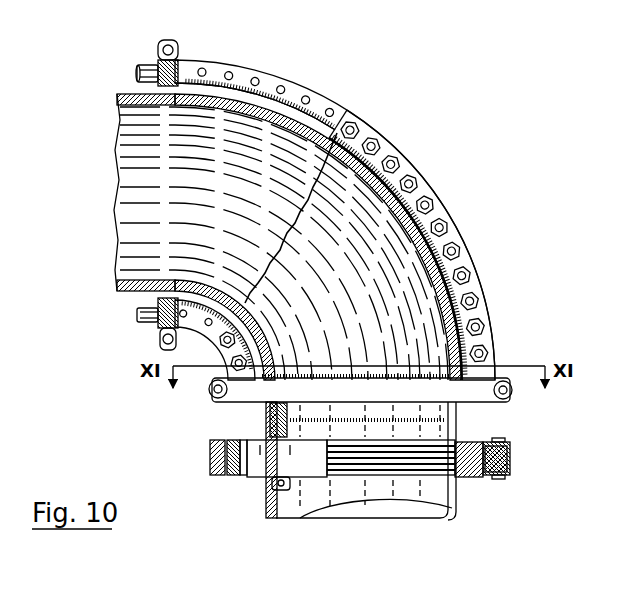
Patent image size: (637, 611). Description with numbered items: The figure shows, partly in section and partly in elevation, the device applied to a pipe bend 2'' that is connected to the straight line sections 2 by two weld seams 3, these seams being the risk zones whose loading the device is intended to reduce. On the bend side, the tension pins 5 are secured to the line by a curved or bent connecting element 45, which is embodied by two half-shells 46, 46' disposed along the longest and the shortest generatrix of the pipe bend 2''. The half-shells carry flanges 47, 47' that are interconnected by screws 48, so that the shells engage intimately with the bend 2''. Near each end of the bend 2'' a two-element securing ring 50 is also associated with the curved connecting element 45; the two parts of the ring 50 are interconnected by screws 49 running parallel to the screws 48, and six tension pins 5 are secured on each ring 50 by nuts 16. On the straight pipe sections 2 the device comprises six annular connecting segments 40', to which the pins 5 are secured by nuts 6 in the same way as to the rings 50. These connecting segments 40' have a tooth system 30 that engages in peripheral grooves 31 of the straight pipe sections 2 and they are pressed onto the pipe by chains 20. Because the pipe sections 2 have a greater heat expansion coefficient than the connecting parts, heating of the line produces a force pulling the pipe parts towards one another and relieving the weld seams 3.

The pipe section 2 is at (287, 325).
The pipe bend 2'' is at (264, 210).
The weld seam 3 is at (133, 91).
The tension pin 5 is at (137, 316).
The nut 6 is at (273, 487).
The nut 16 is at (302, 380).
The chain 20 is at (518, 466).
The tooth system 30 is at (460, 478).
The peripheral groove 31 is at (345, 472).
The annular connecting segment 40' is at (509, 486).
The curved connecting element 45 is at (412, 156).
The half-shell 46 is at (326, 218).
The half-shell 46' is at (411, 259).
The flange 47 is at (343, 157).
The flange 47' is at (179, 339).
The screw 48 is at (478, 292).
The screw 49 is at (213, 398).
The securing ring 50 is at (158, 56).